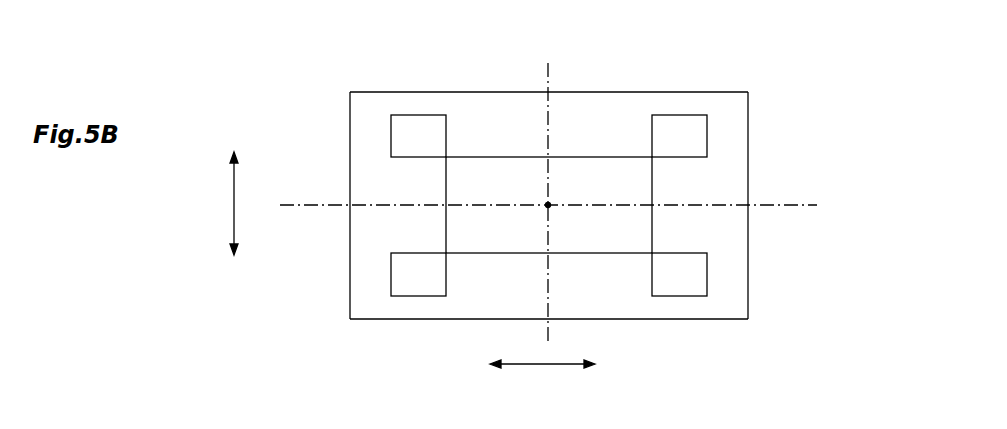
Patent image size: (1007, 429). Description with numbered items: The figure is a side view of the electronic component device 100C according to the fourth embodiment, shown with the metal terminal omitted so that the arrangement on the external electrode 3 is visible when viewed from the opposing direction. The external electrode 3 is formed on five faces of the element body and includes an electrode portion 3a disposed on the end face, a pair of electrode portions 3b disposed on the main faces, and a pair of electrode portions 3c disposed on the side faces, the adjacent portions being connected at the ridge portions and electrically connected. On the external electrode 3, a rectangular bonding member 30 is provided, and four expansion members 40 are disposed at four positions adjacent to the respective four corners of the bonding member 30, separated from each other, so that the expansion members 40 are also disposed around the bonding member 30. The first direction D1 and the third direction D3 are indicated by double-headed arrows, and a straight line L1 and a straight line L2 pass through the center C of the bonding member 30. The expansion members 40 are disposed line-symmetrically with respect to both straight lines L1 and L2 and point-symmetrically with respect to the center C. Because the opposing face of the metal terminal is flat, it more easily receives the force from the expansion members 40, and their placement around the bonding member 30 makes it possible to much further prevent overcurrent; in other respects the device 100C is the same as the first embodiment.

The external electrode 3 is at (556, 199).
The electrode portion 3a is at (556, 199).
The electrode portion 3b is at (402, 92).
The electrode portion 3c is at (350, 148).
The bonding member 30 is at (493, 157).
The expansion member 40 is at (422, 115).
The center C is at (548, 205).
The straight line L1 is at (788, 204).
The straight line L2 is at (551, 300).
The first direction D1 is at (232, 205).
The third direction D3 is at (538, 368).
The electronic component device 100C is at (820, 68).